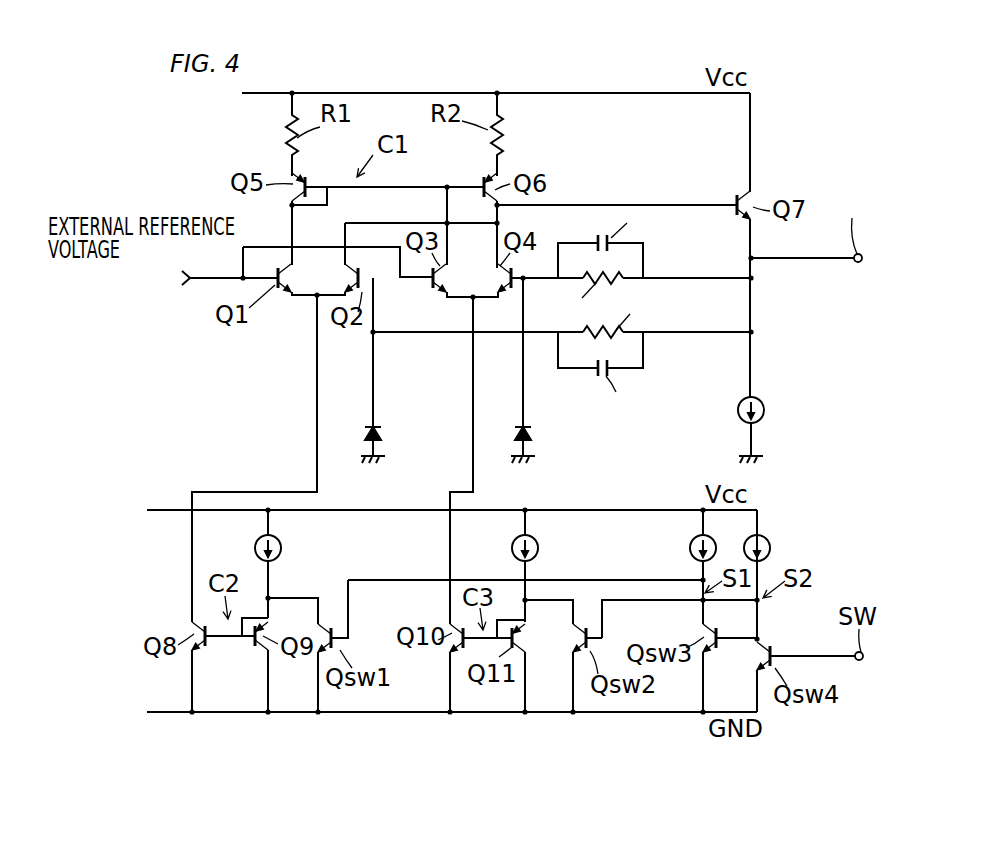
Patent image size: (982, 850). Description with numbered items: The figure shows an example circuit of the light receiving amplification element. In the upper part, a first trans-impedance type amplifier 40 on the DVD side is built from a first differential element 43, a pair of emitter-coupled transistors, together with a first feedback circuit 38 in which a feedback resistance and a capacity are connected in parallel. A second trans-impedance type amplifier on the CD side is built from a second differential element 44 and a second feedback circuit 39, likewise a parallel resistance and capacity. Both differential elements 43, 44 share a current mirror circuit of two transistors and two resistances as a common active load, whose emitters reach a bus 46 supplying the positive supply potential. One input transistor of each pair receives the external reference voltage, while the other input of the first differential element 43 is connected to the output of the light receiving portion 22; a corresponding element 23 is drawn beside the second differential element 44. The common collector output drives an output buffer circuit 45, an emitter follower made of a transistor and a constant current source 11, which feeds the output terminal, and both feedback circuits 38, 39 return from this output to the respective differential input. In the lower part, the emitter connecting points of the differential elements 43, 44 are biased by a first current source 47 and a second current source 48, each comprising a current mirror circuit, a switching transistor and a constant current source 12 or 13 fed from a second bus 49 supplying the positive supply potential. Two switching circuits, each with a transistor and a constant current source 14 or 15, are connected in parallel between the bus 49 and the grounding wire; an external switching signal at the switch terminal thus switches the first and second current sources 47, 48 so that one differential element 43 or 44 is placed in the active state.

The bus 46 is at (575, 93).
The bus 49 is at (611, 508).
The output buffer circuit 45 is at (766, 239).
The second feedback circuit 39 is at (658, 257).
The first feedback circuit 38 is at (659, 360).
The first trans-impedance type amplifier 40 is at (619, 311).
The constant current source 11 is at (771, 404).
The light receiving portion 22 is at (383, 432).
The diode 23 is at (533, 432).
The first differential element 43 is at (294, 306).
The second differential element 44 is at (454, 302).
The constant current source 12 is at (281, 548).
The constant current source 13 is at (538, 548).
The constant current source 14 is at (689, 546).
The constant current source 15 is at (768, 542).
The first current source 47 is at (294, 728).
The second current source 48 is at (586, 729).